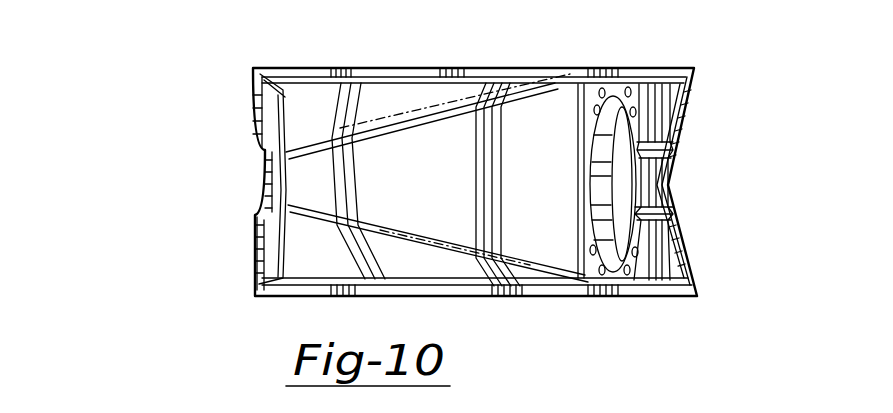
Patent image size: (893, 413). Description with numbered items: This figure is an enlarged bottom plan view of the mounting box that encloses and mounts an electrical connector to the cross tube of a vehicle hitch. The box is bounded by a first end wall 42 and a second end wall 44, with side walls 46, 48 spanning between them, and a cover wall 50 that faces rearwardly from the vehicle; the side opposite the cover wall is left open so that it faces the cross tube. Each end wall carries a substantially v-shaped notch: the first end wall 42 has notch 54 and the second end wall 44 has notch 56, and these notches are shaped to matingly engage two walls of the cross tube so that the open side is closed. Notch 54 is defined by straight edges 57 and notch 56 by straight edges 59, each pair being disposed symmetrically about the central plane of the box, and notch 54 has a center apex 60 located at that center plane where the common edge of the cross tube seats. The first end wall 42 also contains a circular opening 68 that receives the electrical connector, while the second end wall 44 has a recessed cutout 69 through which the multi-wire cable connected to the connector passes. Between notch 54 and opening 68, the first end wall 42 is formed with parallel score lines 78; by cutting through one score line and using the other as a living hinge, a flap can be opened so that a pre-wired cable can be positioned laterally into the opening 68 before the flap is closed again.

The first end wall 42 is at (675, 68).
The second end wall 44 is at (268, 110).
The side wall 46 is at (545, 297).
The side wall 48 is at (514, 67).
The cover wall 50 is at (455, 143).
The notch 54 is at (691, 242).
The notch 56 is at (251, 252).
The straight edges 57 is at (692, 105).
The straight edges 59 is at (250, 84).
The center apex 60 is at (672, 182).
The circular opening 68 is at (640, 300).
The recessed cutout 69 is at (264, 193).
The score lines 78 is at (677, 143).